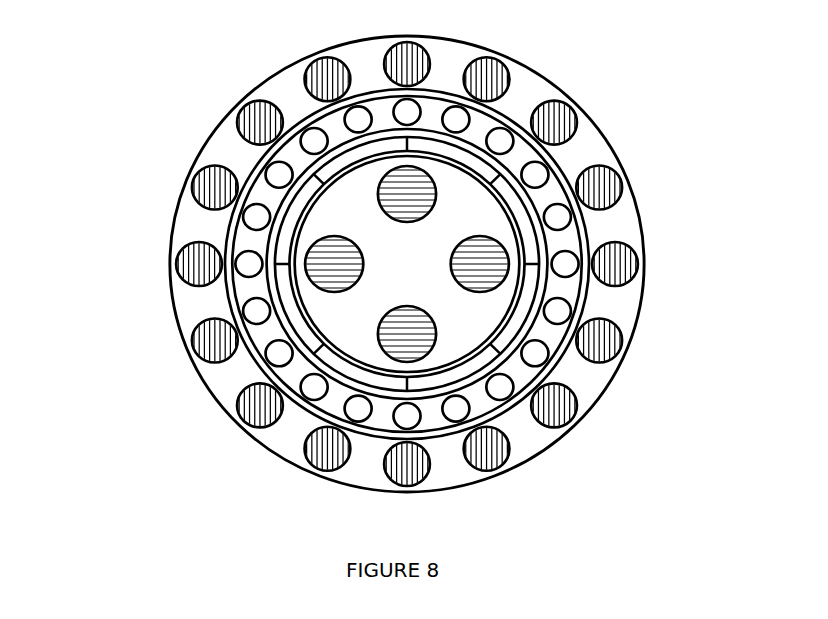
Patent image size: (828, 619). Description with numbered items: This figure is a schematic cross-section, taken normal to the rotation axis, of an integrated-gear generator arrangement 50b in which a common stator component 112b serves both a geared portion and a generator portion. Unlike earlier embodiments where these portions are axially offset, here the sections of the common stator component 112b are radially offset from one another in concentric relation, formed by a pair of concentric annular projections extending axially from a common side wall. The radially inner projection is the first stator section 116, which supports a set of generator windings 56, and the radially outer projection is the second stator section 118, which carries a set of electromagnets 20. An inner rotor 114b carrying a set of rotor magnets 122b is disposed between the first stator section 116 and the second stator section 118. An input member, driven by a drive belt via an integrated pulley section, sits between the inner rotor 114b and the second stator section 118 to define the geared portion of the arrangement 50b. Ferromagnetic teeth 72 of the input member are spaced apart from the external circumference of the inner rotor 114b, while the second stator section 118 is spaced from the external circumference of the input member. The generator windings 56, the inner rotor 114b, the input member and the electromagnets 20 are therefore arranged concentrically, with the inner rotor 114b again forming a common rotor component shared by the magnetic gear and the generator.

The integrated-gear generator arrangement 50b is at (124, 78).
The electromagnets 20 is at (558, 115).
The inner rotor 114b is at (515, 187).
The ferromagnetic teeth 72 is at (254, 213).
The generator windings 56 is at (484, 265).
The first stator section 116 is at (465, 316).
The second stator section 118 is at (575, 377).
The common stator component 112b is at (338, 303).
The rotor magnets 122b is at (342, 373).